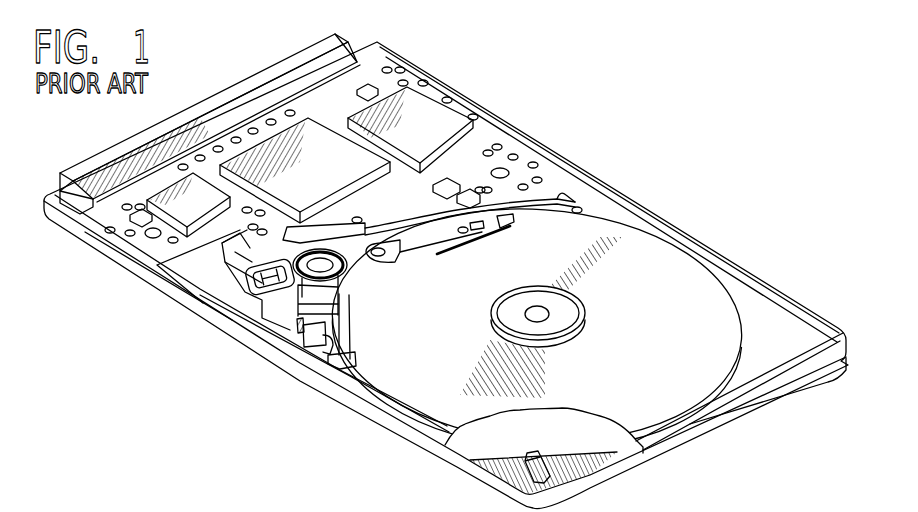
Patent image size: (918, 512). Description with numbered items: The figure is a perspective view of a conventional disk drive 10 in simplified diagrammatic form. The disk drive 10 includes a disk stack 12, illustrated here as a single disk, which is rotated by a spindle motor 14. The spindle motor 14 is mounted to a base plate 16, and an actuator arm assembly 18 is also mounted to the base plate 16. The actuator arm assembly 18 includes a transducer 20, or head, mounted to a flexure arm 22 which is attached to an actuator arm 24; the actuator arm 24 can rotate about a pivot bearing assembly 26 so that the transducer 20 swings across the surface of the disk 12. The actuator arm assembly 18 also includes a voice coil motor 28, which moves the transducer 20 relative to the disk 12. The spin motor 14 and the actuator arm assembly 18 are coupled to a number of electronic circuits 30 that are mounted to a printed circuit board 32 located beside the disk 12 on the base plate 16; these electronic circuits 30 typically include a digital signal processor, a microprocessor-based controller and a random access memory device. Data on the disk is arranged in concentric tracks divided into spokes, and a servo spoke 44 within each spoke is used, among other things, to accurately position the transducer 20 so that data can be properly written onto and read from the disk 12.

The disk drive 10 is at (580, 151).
The disk stack 12 is at (710, 282).
The spindle motor 14 is at (568, 320).
The base plate 16 is at (766, 326).
The actuator arm assembly 18 is at (476, 251).
The transducer 20 is at (521, 222).
The flexure arm 22 is at (437, 252).
The actuator arm 24 is at (358, 264).
The pivot bearing assembly 26 is at (348, 279).
The voice coil motor 28 is at (253, 299).
The electronic circuits 30 is at (211, 209).
The printed circuit board 32 is at (327, 105).
The servo spoke 44 is at (500, 448).